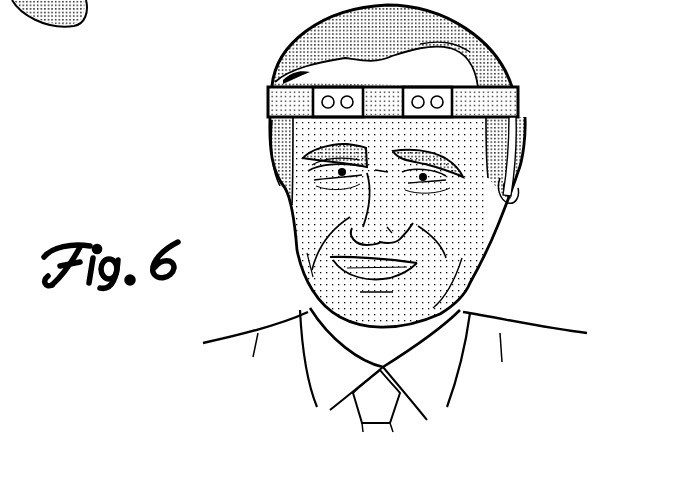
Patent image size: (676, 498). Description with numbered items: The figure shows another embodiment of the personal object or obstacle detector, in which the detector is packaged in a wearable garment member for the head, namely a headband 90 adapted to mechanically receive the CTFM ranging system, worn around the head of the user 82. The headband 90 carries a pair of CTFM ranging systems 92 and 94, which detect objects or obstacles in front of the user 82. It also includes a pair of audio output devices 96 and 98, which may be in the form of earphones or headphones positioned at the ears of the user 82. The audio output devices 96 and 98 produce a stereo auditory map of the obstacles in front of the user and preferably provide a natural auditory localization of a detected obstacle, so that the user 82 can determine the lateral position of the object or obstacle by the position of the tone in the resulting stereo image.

The user 82 is at (535, 345).
The headband 90 is at (507, 98).
The CTFM ranging system 92 is at (278, 88).
The CTFM ranging system 94 is at (453, 100).
The audio output device 96 is at (272, 180).
The audio output device 98 is at (516, 190).